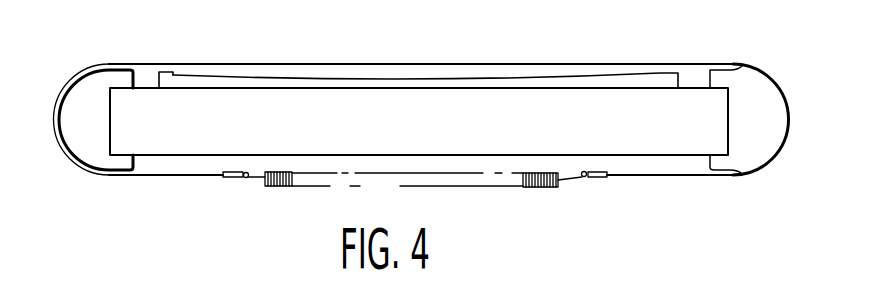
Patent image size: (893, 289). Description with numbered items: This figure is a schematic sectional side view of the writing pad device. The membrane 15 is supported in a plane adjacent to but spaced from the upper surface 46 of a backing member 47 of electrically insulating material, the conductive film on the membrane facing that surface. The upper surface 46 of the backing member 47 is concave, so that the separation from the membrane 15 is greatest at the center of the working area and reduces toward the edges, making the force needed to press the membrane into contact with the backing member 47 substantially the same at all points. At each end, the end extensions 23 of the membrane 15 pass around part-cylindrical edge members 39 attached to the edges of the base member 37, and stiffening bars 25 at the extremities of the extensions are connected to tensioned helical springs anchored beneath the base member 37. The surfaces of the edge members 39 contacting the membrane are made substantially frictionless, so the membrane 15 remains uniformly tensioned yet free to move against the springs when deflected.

The membrane 15 is at (638, 64).
The end extensions 23 is at (157, 177).
The stiffening bars 25 is at (227, 178).
The base member 37 is at (382, 137).
The part-cylindrical edge members 39 is at (95, 152).
The upper surface 46 is at (264, 77).
The backing member 47 is at (178, 76).